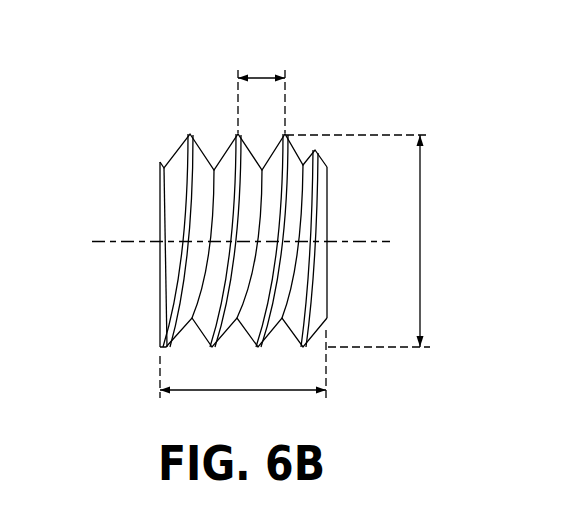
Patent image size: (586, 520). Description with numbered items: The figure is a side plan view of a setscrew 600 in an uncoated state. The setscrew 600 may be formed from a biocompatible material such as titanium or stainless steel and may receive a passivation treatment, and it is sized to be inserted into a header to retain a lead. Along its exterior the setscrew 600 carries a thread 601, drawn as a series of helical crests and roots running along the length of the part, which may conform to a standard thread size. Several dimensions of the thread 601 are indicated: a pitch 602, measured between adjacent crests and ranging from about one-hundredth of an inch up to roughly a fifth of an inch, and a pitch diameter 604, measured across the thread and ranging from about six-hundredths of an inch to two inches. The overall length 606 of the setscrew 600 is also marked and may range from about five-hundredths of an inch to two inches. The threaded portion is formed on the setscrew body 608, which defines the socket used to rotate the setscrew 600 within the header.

The setscrew 600 is at (115, 55).
The thread 601 is at (189, 133).
The pitch 602 is at (262, 74).
The pitch diameter 604 is at (421, 239).
The overall length 606 is at (243, 392).
The setscrew body 608 is at (318, 193).